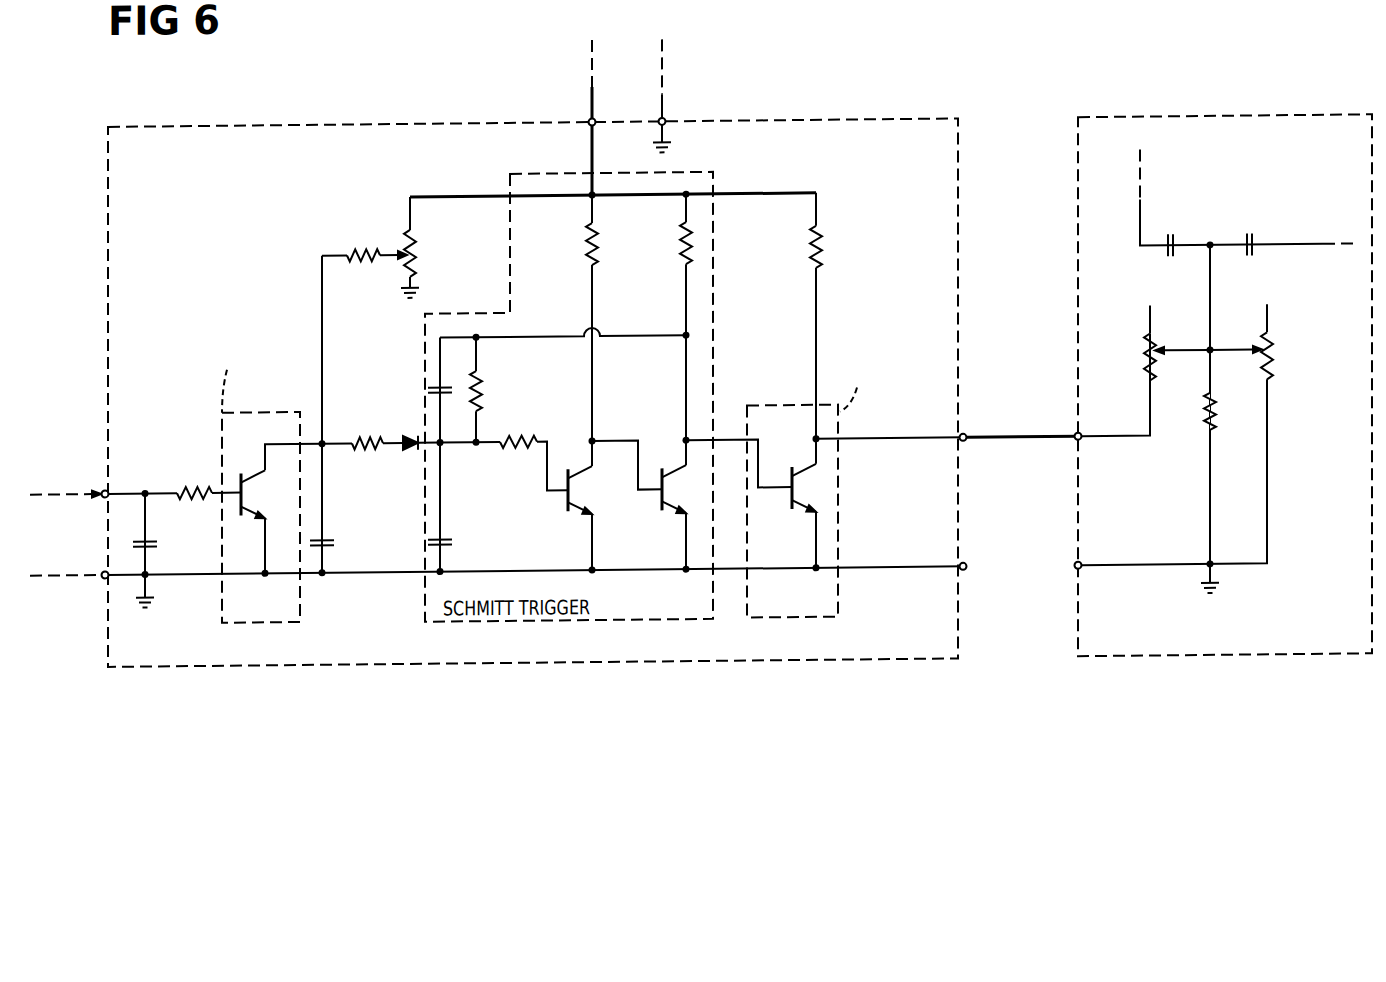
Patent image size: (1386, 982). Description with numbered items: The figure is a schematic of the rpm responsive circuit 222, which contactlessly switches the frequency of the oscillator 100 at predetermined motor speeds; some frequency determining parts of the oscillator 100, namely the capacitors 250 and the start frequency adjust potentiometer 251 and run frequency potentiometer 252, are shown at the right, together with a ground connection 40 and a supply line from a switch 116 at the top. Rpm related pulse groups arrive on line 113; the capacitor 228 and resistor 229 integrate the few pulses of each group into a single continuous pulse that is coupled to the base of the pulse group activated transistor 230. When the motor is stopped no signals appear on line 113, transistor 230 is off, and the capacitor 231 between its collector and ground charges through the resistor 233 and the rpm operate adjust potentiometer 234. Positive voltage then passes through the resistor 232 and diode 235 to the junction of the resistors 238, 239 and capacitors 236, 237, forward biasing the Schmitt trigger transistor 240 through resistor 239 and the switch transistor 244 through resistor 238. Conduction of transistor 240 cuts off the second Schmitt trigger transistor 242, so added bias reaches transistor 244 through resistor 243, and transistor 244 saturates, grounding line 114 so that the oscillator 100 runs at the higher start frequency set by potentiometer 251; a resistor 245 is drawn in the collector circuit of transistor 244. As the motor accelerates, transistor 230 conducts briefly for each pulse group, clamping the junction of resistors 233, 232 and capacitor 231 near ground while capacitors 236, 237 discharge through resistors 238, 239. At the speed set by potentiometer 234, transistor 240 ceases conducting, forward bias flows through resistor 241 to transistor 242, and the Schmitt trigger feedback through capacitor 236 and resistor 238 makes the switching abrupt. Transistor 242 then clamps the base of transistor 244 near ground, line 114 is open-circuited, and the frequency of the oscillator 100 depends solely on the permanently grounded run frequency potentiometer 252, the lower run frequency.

The line 113 is at (98, 489).
The ground line 40 is at (663, 100).
The line from switch 116 is at (592, 102).
The resistor 229 is at (193, 480).
The capacitor 228 is at (150, 538).
The transistor 230 is at (247, 491).
The capacitor 231 is at (334, 543).
The resistor 232 is at (365, 437).
The resistor 233 is at (358, 246).
The rpm operate adjust potentiometer 234 is at (420, 258).
The diode 235 is at (411, 453).
The capacitor 236 is at (437, 389).
The capacitor 237 is at (453, 539).
The resistor 238 is at (481, 391).
The resistor 239 is at (514, 453).
The Schmitt trigger transistor 240 is at (582, 495).
The resistor 241 is at (585, 237).
The Schmitt trigger transistor 242 is at (665, 493).
The resistor 243 is at (678, 238).
The transistor switch 244 is at (805, 507).
The resistor 245 is at (807, 237).
The line 114 is at (1015, 439).
The oscillator 100 is at (1142, 122).
The capacitors 250 is at (1238, 248).
The start frequency adjust potentiometer 251 is at (1158, 341).
The run frequency potentiometer 252 is at (1258, 341).
The rpm responsive circuit 222 is at (668, 668).